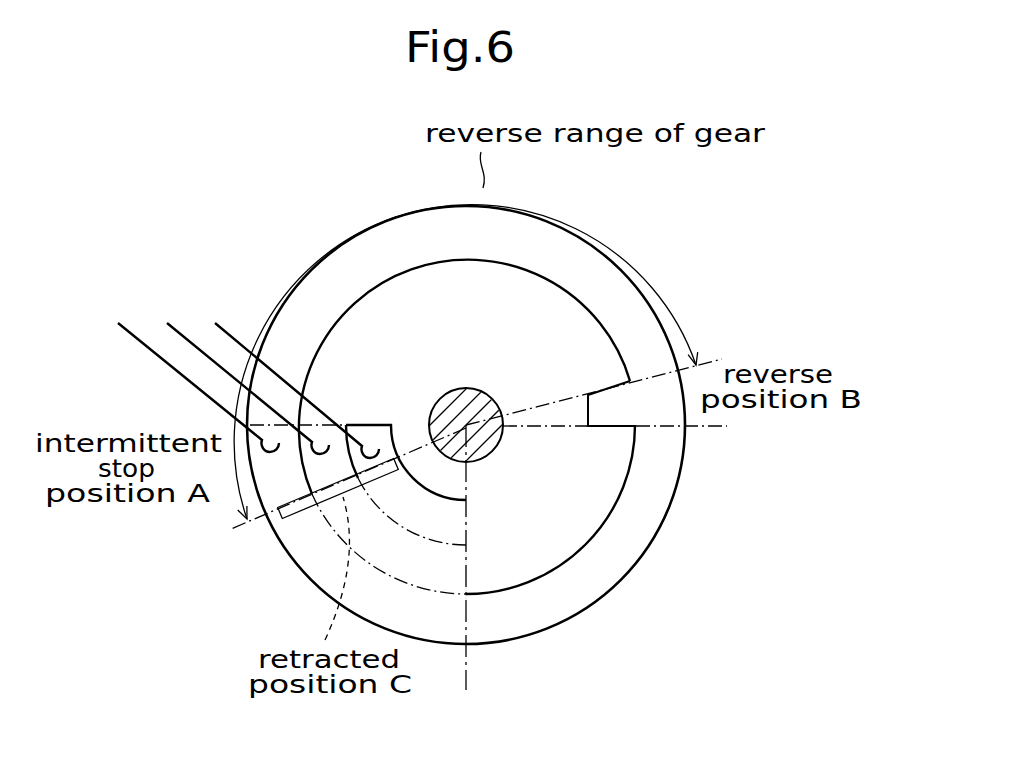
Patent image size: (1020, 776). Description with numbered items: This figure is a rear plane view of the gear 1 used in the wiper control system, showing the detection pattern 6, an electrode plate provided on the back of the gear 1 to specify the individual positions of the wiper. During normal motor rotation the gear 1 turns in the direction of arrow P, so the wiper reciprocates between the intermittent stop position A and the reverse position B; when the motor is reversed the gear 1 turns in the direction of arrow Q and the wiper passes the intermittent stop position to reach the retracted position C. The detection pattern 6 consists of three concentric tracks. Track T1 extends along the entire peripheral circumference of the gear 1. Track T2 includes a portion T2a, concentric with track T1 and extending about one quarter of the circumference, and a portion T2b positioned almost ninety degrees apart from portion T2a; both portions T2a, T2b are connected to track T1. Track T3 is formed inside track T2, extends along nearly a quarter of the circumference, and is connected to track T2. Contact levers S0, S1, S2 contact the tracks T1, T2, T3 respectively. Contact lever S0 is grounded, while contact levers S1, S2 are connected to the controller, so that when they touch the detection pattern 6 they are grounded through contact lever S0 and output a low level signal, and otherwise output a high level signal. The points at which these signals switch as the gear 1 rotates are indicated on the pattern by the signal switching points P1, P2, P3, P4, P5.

The gear 1 is at (632, 573).
The detection pattern 6 is at (457, 563).
The arrow P is at (288, 212).
The arrow Q is at (652, 222).
The track T1 is at (342, 286).
The track T2 is at (348, 358).
The portion T2a is at (428, 538).
The portion T2b is at (604, 428).
The track T3 is at (366, 426).
The signal switching point P1 is at (304, 424).
The signal switching point P2 is at (262, 522).
The signal switching point P3 is at (467, 662).
The signal switching point P4 is at (702, 427).
The signal switching point P5 is at (712, 363).
The contact lever S0 is at (130, 332).
The contact lever S1 is at (185, 332).
The contact lever S2 is at (243, 332).